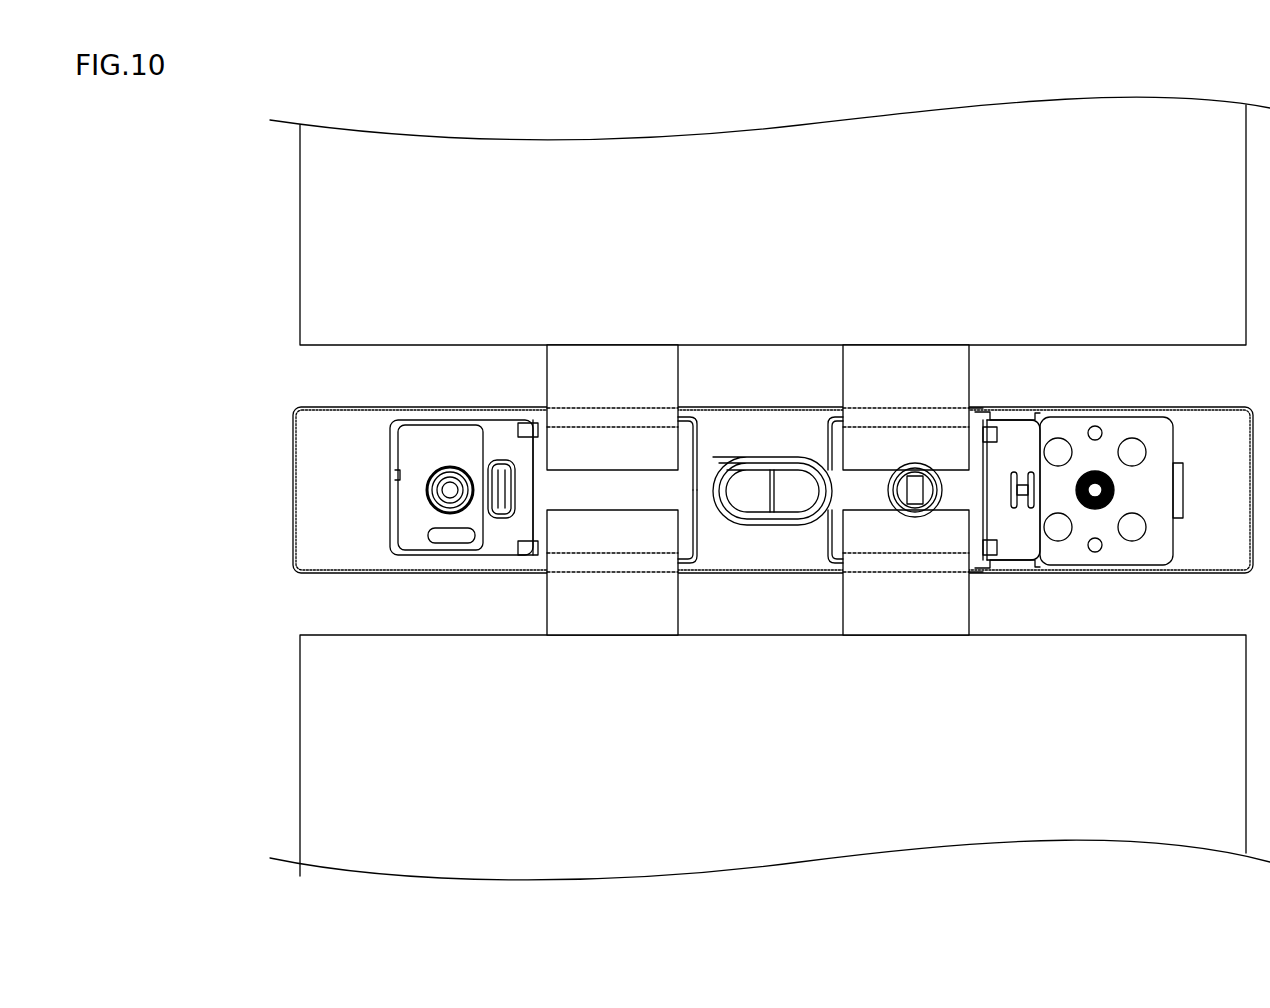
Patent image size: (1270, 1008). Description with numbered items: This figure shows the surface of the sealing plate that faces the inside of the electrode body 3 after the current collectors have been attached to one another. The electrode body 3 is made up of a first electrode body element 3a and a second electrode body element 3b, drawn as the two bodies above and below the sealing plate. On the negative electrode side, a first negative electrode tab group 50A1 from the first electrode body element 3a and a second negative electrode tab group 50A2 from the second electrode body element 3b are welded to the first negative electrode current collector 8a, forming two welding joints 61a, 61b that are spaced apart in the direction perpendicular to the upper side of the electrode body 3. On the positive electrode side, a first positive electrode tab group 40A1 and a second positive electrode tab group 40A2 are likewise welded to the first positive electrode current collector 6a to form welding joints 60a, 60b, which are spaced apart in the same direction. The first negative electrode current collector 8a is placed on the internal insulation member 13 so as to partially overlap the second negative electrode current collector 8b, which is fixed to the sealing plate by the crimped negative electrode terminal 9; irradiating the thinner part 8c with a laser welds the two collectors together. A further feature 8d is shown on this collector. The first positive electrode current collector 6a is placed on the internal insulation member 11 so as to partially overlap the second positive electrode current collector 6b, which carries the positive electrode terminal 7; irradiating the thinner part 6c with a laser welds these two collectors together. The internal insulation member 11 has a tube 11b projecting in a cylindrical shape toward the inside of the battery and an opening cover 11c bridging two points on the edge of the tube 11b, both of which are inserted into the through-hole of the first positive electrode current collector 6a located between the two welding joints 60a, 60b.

The electrode body 3 is at (190, 368).
The first electrode body element 3a is at (313, 310).
The second electrode body element 3b is at (315, 680).
The first negative electrode tab group 50A1 is at (655, 360).
The second negative electrode tab group 50A2 is at (643, 633).
The first positive electrode tab group 40A1 is at (864, 360).
The second positive electrode tab group 40A2 is at (864, 620).
The welding joint 61a is at (583, 443).
The welding joint 61b is at (583, 540).
The welding joint 60a is at (948, 445).
The welding joint 60b is at (950, 540).
The first negative electrode current collector 8a is at (540, 413).
The second negative electrode current collector 8b is at (424, 436).
The thinner part 8c is at (510, 517).
The slot 8d is at (493, 460).
The negative electrode terminal 9 is at (437, 503).
The internal insulation member 13 is at (465, 555).
The internal insulation member 11 is at (980, 570).
The tube 11b is at (920, 510).
The opening cover 11c is at (913, 470).
The first positive electrode current collector 6a is at (977, 412).
The second positive electrode current collector 6b is at (1070, 547).
The thinner part 6c is at (1031, 470).
The positive electrode terminal 7 is at (1097, 470).